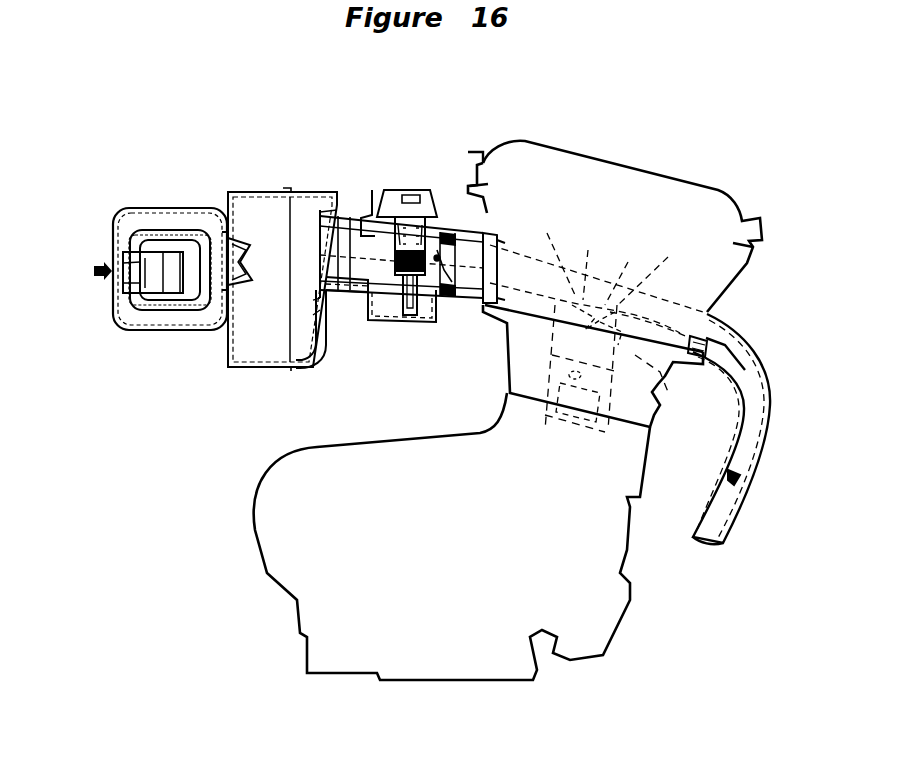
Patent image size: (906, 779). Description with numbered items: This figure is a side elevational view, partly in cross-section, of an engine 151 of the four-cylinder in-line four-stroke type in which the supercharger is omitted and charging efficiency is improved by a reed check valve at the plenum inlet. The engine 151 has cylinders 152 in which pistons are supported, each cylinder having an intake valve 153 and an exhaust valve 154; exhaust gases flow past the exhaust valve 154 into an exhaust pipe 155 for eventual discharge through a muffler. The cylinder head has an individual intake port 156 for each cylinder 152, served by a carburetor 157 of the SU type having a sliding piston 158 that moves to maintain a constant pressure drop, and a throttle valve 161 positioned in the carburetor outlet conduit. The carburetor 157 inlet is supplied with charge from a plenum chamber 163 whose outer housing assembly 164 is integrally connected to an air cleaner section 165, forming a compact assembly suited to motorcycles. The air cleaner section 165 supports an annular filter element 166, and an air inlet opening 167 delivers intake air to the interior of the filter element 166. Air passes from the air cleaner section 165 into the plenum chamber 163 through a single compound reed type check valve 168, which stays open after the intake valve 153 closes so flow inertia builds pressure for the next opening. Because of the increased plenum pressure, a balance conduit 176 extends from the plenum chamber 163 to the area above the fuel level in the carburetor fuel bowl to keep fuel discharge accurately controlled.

The engine 151 is at (488, 646).
The cylinder 152 is at (655, 392).
The intake valve 153 is at (596, 280).
The exhaust valve 154 is at (645, 294).
The exhaust pipe 155 is at (730, 526).
The intake port 156 is at (473, 285).
The carburetor 157 is at (410, 190).
The sliding piston 158 is at (437, 210).
The throttle valve 161 is at (437, 262).
The plenum chamber 163 is at (262, 192).
The outer housing assembly 164 is at (240, 366).
The air cleaner section 165 is at (160, 200).
The filter element 166 is at (145, 230).
The air inlet opening 167 is at (118, 305).
The reed type check valve 168 is at (216, 252).
The balance conduit 176 is at (330, 292).